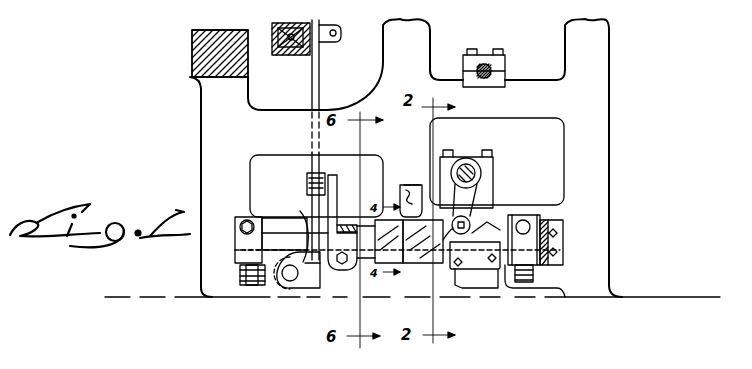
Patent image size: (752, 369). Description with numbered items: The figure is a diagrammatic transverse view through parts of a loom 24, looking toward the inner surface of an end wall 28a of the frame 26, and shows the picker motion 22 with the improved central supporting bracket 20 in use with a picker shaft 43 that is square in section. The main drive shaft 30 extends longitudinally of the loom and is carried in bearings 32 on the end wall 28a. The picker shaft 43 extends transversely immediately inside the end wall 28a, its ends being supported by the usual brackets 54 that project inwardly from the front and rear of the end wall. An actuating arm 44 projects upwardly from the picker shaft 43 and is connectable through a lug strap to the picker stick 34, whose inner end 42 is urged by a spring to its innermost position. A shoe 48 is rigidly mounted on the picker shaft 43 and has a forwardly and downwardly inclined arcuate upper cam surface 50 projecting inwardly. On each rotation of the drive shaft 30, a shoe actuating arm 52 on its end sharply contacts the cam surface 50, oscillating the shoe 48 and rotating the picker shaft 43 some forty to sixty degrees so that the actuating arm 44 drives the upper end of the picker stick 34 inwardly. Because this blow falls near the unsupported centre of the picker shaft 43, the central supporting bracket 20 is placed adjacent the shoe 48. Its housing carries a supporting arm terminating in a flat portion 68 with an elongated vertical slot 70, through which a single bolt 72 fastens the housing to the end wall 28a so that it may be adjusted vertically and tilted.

The central supporting bracket 20 is at (431, 263).
The picker motion 22 is at (322, 85).
The loom 24 is at (605, 98).
The frame 26 is at (605, 137).
The end wall 28a is at (607, 182).
The main drive shaft 30 is at (481, 163).
The bearings 32 is at (476, 172).
The picker stick 34 is at (312, 88).
The inner end 42 is at (307, 224).
The picker shaft 43 is at (282, 246).
The actuating arm 44 is at (337, 207).
The shoe 48 is at (478, 262).
The upper cam surface 50 is at (490, 224).
The shoe actuating arm 52 is at (485, 200).
The brackets 54 is at (235, 256).
The flat portion 68 is at (497, 163).
The elongated vertical slot 70 is at (417, 185).
The bolt 72 is at (417, 184).